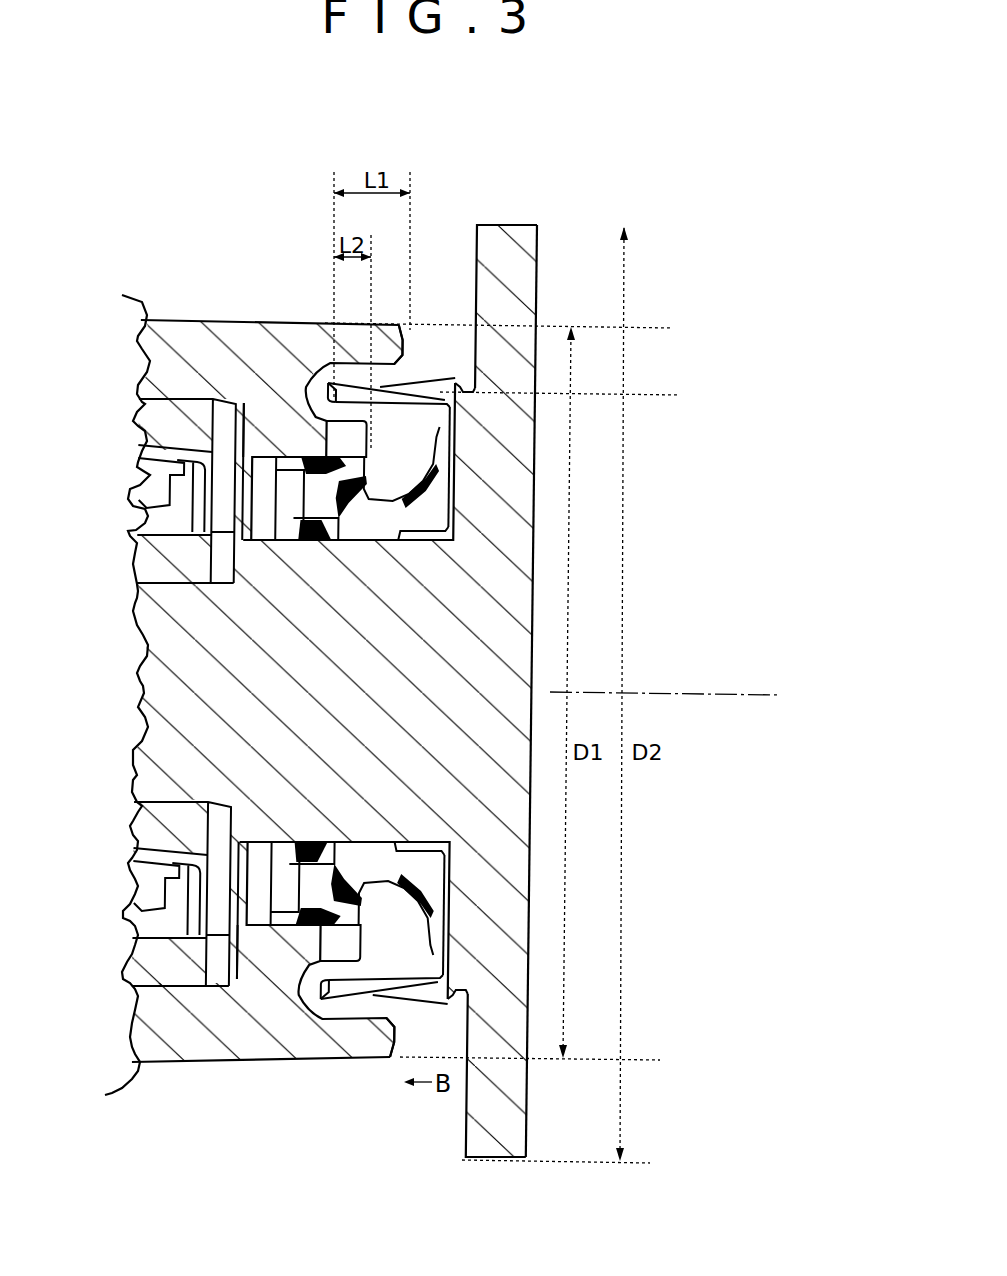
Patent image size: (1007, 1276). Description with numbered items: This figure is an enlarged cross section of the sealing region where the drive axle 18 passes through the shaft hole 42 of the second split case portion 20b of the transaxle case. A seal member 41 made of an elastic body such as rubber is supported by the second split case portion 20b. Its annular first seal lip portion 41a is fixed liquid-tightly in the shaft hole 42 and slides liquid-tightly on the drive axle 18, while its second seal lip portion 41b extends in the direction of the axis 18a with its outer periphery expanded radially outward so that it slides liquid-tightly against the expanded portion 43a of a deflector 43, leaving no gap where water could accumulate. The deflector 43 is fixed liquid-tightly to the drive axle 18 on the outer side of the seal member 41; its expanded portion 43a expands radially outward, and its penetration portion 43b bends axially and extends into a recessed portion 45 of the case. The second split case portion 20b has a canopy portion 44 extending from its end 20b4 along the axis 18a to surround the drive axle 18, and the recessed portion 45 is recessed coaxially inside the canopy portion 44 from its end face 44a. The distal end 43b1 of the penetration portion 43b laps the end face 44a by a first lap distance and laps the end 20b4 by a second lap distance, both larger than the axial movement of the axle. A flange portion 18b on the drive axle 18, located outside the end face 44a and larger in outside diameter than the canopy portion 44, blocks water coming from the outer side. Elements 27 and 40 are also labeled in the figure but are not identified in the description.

The drive axle 18 is at (212, 693).
The axis 18a is at (745, 697).
The flange portion 18b is at (516, 226).
The second split case portion 20b is at (213, 317).
The end of second split case portion 20b4 is at (453, 398).
The encoder 27 is at (135, 412).
The seal device 40 is at (443, 337).
The seal member 41 is at (452, 509).
The first seal lip portion 41a is at (303, 563).
The second seal lip portion 41b is at (454, 448).
The shaft hole 42 is at (278, 400).
The deflector 43 is at (462, 500).
The expanded portion 43a is at (447, 488).
The penetration portion 43b is at (352, 393).
The distal end of penetration portion 43b1 is at (330, 375).
The canopy portion 44 is at (350, 330).
The end face of canopy portion 44a is at (428, 340).
The recessed portion 45 is at (322, 370).